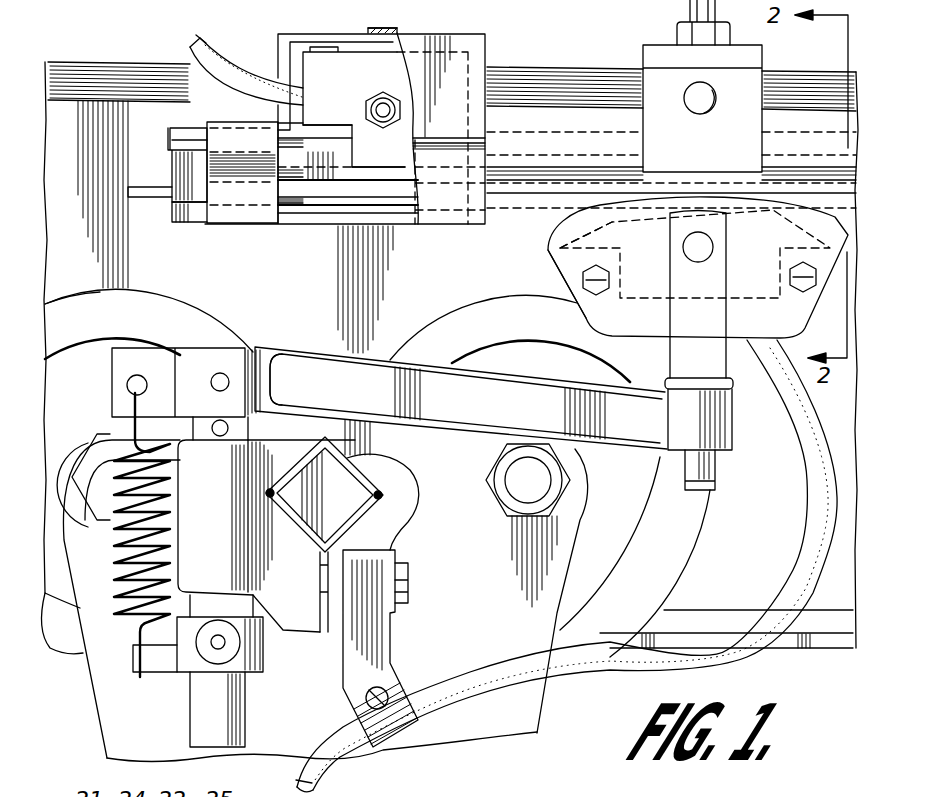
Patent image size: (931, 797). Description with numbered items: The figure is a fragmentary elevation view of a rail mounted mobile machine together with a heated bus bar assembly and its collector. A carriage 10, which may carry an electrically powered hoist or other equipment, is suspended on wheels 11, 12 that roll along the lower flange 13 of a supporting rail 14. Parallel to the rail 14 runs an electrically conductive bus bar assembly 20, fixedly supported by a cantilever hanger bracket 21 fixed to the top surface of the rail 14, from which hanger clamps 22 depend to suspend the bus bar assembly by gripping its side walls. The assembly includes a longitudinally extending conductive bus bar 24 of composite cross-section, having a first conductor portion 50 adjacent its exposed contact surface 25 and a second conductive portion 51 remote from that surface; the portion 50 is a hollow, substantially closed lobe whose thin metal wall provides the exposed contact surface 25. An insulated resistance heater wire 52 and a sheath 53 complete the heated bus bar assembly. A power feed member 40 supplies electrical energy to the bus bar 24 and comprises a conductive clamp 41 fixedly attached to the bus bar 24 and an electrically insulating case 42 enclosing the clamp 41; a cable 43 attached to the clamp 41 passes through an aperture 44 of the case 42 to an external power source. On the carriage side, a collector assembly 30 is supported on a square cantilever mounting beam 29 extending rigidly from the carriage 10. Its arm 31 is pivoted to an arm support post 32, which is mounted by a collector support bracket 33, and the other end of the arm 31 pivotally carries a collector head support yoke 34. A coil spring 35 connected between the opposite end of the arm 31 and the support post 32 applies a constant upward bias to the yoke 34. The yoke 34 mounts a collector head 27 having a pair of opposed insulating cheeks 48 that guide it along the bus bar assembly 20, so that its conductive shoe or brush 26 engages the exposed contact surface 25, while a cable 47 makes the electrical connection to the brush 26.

The carriage 10 is at (475, 517).
The wheel 11 is at (195, 315).
The wheel 12 is at (453, 318).
The lower flange 13 is at (788, 642).
The supporting rail 14 is at (317, 297).
The bus bar assembly 20 is at (182, 123).
The cantilever hanger bracket 21 is at (745, 58).
The hanger clamp 22 is at (643, 71).
The bus bar 24 is at (393, 197).
The exposed contact surface 25 is at (190, 217).
The conductive shoe or brush 26 is at (550, 232).
The collector head 27 is at (561, 266).
The cantilever mounting beam 29 is at (303, 485).
The collector assembly 30 is at (293, 388).
The arm 31 is at (383, 360).
The arm support post 32 is at (248, 423).
The collector support bracket 33 is at (220, 577).
The collector head support yoke 34 is at (705, 350).
The coil spring 35 is at (120, 575).
The power feed member 40 is at (369, 112).
The conductive clamp 41 is at (350, 86).
The insulating case 42 is at (308, 32).
The cable 43 is at (180, 52).
The aperture 44 is at (273, 82).
The cable 47 is at (813, 496).
The cheek 48 is at (774, 331).
The first conductor portion 50 is at (177, 190).
The second conductive portion 51 is at (305, 135).
The insulated resistance heater wire 52 is at (143, 187).
The sheath 53 is at (553, 132).